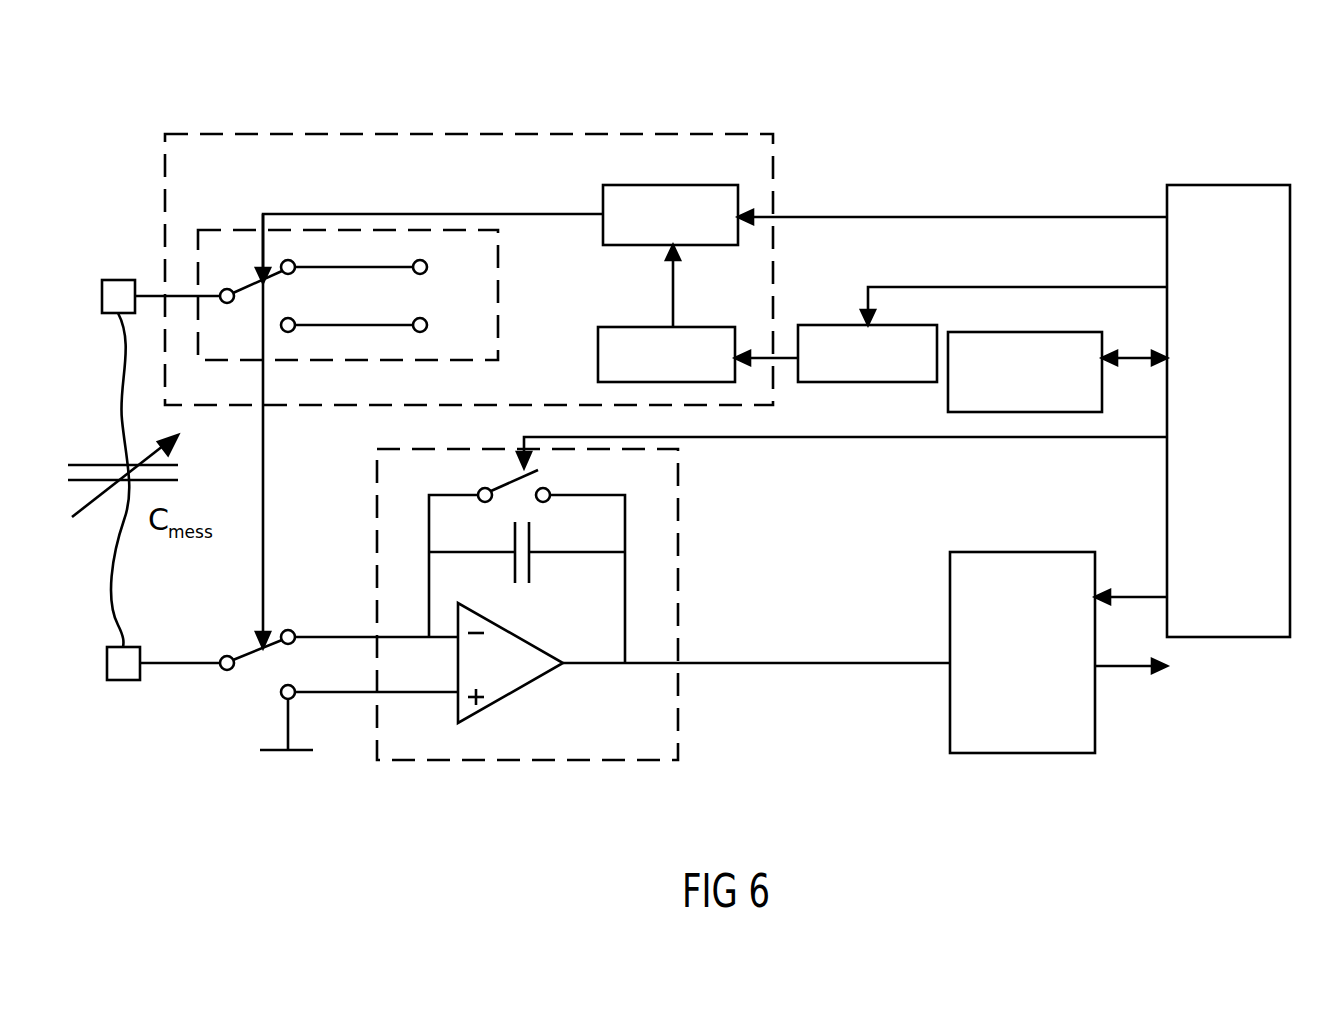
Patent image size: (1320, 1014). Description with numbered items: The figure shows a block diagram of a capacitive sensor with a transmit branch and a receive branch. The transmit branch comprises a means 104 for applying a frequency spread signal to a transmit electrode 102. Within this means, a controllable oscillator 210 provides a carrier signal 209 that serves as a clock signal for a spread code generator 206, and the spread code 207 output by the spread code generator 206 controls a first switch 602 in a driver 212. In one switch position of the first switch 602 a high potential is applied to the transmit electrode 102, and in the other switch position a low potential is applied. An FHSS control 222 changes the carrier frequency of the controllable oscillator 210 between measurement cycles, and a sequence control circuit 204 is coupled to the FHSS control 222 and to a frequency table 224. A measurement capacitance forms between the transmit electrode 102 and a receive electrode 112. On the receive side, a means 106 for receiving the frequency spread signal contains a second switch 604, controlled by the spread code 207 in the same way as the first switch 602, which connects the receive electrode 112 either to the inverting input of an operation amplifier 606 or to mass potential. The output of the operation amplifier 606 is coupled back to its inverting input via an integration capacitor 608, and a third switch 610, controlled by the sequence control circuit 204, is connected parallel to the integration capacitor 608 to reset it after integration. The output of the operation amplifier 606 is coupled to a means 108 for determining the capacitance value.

The transmit electrode 102 is at (106, 280).
The means for applying a frequency spread signal 104 is at (565, 134).
The means for receiving the frequency spread signal 106 is at (388, 760).
The means for determining the capacitance value 108 is at (1007, 753).
The receive electrode 112 is at (128, 680).
The sequence control circuit 204 is at (1253, 637).
The spread code generator 206 is at (690, 185).
The spread code 207 is at (415, 214).
The carrier signal 209 is at (677, 296).
The controllable oscillator 210 is at (598, 372).
The driver 212 is at (218, 230).
The FHSS control 222 is at (828, 325).
The frequency table 224 is at (1053, 412).
The first switch 602 is at (285, 288).
The second switch 604 is at (277, 660).
The operation amplifier 606 is at (520, 690).
The integration capacitor 608 is at (532, 568).
The third switch 610 is at (480, 467).